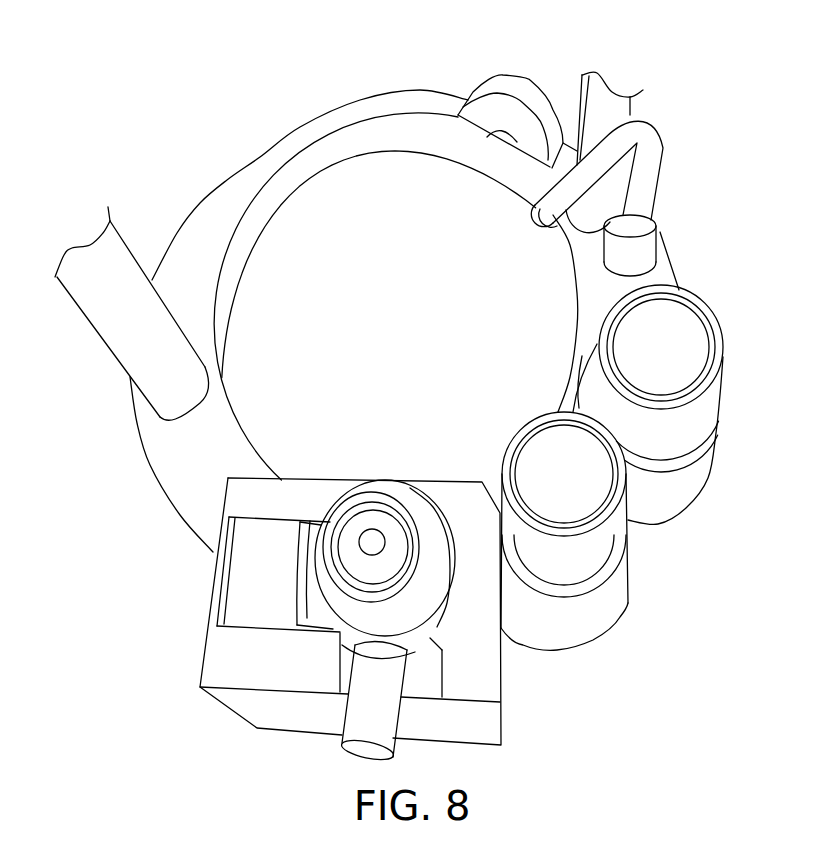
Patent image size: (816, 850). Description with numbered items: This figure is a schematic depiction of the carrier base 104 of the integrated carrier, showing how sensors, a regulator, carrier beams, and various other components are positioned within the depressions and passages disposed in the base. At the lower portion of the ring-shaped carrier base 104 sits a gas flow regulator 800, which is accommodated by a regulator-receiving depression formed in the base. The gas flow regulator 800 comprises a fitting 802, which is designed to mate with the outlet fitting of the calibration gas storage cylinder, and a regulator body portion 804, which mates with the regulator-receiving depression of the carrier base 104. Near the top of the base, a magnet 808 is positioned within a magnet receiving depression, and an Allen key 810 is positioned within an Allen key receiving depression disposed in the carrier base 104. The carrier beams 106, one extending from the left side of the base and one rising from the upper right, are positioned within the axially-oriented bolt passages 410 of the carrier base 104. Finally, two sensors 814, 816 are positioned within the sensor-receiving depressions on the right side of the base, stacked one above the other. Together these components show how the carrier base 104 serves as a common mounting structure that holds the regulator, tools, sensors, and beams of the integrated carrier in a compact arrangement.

The carrier base 104 is at (219, 186).
The carrier beams 106 is at (98, 313).
The axially-oriented bolt passages 410 is at (222, 379).
The gas flow regulator 800 is at (228, 586).
The fitting 802 is at (408, 580).
The regulator body portion 804 is at (391, 484).
The magnet 808 is at (503, 87).
The Allen key 810 is at (652, 167).
The sensor 814 is at (707, 402).
The sensor 816 is at (617, 519).